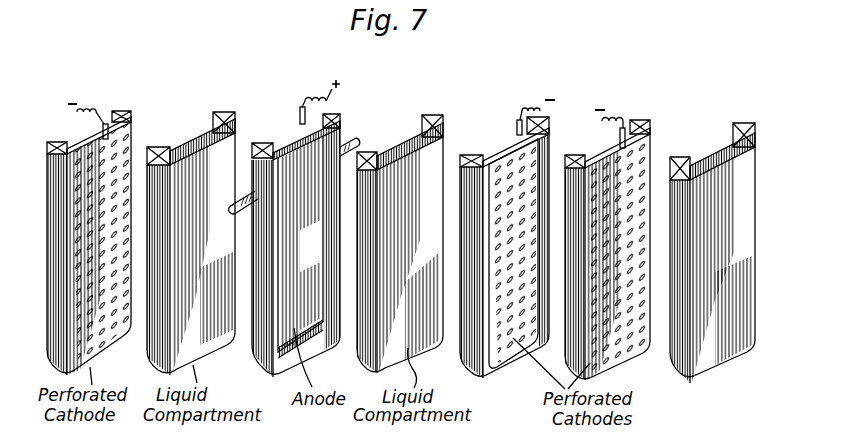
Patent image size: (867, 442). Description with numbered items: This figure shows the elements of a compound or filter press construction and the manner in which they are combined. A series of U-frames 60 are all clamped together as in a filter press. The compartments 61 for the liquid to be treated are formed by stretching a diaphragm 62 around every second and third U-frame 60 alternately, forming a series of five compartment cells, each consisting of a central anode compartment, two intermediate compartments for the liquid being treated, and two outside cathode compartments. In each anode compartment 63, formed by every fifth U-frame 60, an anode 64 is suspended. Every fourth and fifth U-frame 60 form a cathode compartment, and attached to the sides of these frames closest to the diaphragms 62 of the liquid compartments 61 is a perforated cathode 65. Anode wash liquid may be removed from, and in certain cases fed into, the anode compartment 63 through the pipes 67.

The U-frame 60 is at (124, 111).
The compartment for the liquid to be treated 61 is at (197, 143).
The diaphragm 62 is at (451, 258).
The anode compartment 63 is at (293, 142).
The anode 64 is at (300, 242).
The perforated cathode 65 is at (82, 148).
The pipe 67 is at (238, 203).